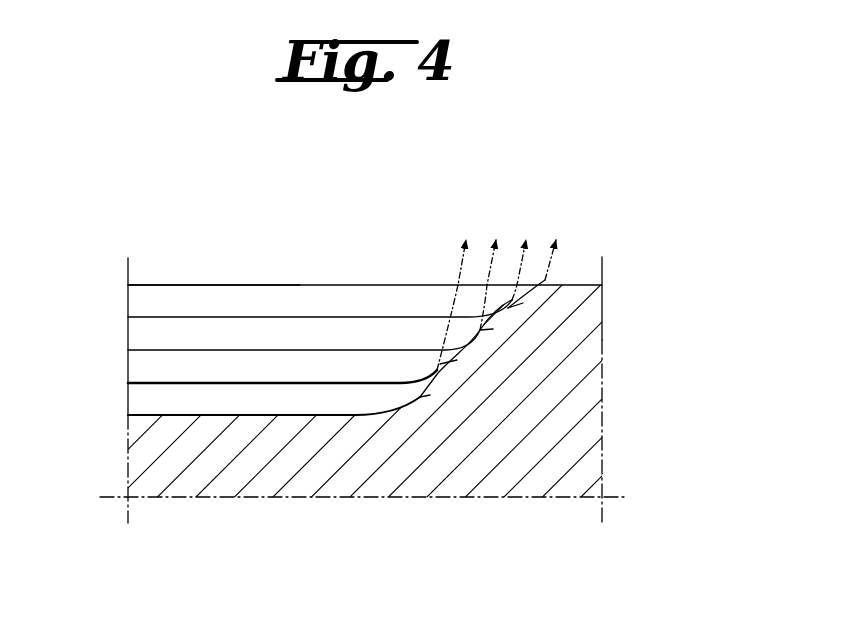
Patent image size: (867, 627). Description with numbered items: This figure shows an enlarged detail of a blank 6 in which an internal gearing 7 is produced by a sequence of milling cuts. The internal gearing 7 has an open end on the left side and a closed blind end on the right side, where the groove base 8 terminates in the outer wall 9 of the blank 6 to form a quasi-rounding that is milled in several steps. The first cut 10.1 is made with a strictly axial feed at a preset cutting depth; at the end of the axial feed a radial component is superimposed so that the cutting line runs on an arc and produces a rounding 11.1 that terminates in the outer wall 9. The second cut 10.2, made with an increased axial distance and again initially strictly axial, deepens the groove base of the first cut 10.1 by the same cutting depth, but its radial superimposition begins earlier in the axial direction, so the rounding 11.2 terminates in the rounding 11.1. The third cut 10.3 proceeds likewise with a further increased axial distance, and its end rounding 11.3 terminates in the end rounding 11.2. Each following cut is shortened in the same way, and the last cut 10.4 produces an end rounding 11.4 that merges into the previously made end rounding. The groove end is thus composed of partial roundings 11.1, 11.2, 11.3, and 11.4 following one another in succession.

The blank 6 is at (558, 315).
The internal gearing 7 is at (152, 284).
The groove base 8 is at (260, 415).
The outer wall 9 is at (193, 284).
The first cut 10.1 is at (221, 316).
The second cut 10.2 is at (278, 349).
The third cut 10.3 is at (322, 383).
The last cut 10.4 is at (172, 415).
The rounding 11.1 is at (523, 303).
The rounding 11.2 is at (493, 329).
The end rounding 11.3 is at (457, 360).
The end rounding 11.4 is at (423, 394).